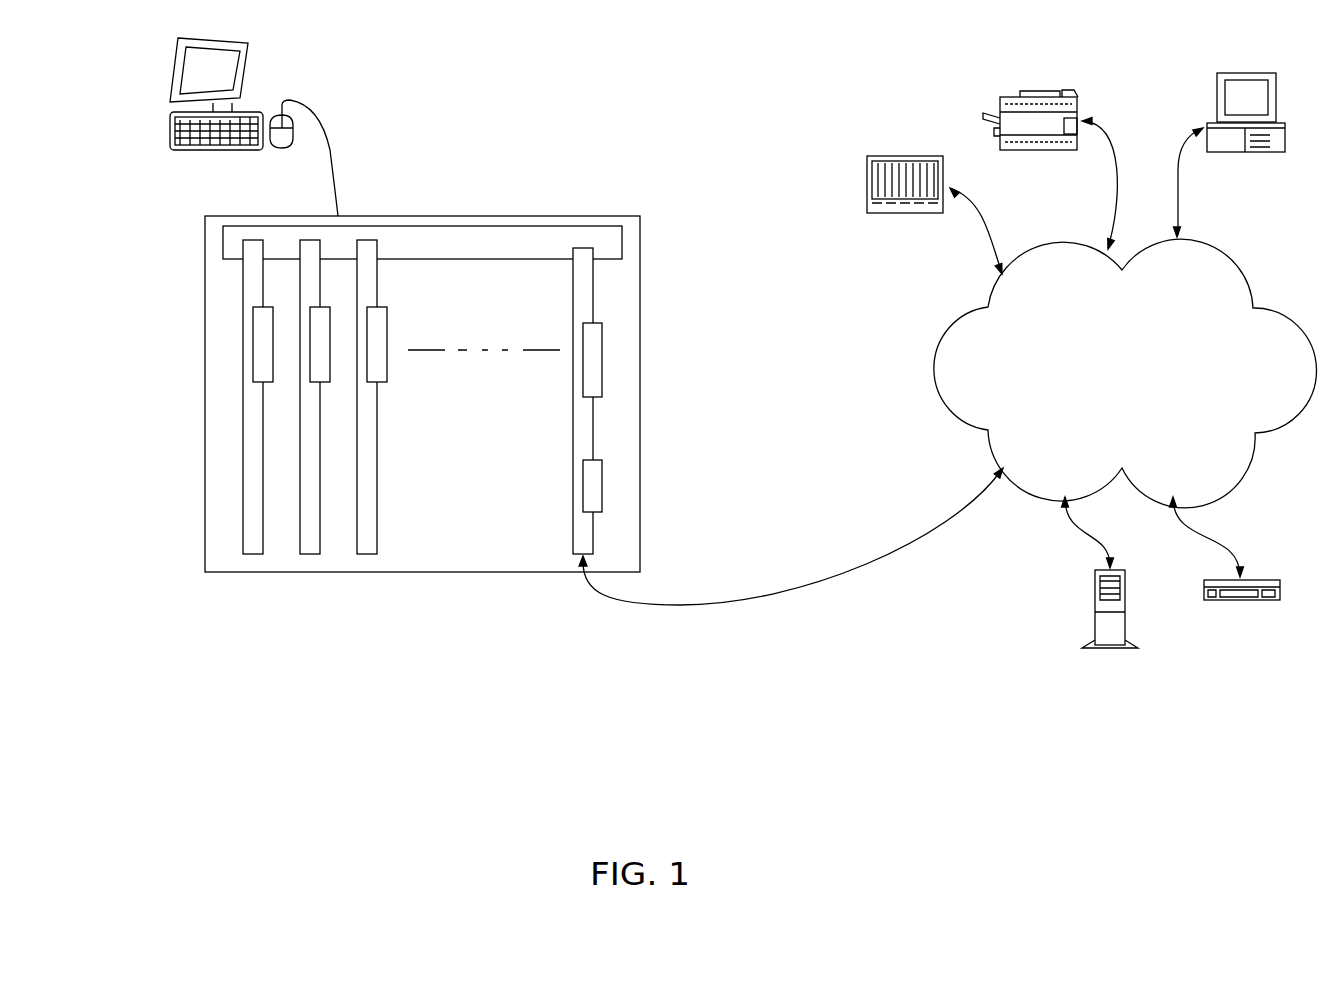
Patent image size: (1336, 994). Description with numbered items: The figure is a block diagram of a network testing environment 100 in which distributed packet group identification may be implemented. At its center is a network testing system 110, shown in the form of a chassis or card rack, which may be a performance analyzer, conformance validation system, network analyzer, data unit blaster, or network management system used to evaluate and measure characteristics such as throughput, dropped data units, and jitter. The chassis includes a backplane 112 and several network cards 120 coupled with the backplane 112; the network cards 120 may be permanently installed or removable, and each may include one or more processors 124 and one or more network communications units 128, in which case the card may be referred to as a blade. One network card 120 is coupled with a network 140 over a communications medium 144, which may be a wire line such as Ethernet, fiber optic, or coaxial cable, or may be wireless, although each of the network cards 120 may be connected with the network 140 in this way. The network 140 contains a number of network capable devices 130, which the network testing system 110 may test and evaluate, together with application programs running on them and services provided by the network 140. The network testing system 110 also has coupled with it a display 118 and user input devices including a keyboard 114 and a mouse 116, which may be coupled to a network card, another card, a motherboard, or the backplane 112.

The network testing environment 100 is at (751, 82).
The network testing system 110 is at (375, 216).
The backplane 112 is at (422, 248).
The keyboard 114 is at (170, 130).
The mouse 116 is at (280, 152).
The display 118 is at (178, 73).
The network cards 120 is at (620, 600).
The processor 124 is at (602, 361).
The network communications unit 128 is at (602, 484).
The device 130 is at (1076, 390).
The network 140 is at (1125, 373).
The communications medium 144 is at (728, 605).